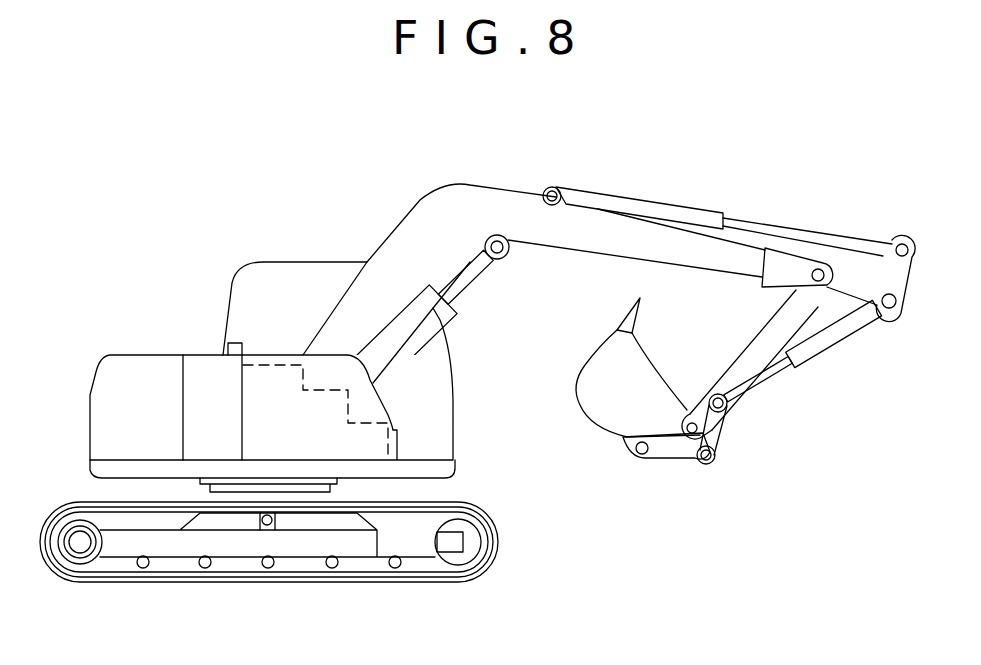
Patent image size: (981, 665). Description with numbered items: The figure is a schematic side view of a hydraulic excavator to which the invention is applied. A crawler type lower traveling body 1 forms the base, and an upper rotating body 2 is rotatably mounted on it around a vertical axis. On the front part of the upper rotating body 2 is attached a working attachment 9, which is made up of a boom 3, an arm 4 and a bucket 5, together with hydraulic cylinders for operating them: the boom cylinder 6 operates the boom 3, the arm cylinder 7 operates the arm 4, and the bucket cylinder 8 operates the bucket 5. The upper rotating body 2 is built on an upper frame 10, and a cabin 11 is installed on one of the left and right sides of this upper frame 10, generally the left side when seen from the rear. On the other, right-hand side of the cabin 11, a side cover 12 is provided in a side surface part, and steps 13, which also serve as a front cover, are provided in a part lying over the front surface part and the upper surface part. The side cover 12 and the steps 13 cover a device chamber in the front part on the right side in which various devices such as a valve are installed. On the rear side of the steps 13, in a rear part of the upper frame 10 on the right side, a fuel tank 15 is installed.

The lower traveling body 1 is at (287, 582).
The upper rotating body 2 is at (232, 278).
The boom 3 is at (423, 208).
The arm 4 is at (815, 333).
The bucket 5 is at (580, 413).
The boom cylinder 6 is at (477, 283).
The arm cylinder 7 is at (668, 200).
The bucket cylinder 8 is at (823, 373).
The working attachment 9 is at (495, 182).
The upper frame 10 is at (172, 478).
The cabin 11 is at (300, 262).
The side cover 12 is at (342, 443).
The steps 13 is at (397, 437).
The fuel tank 15 is at (193, 355).